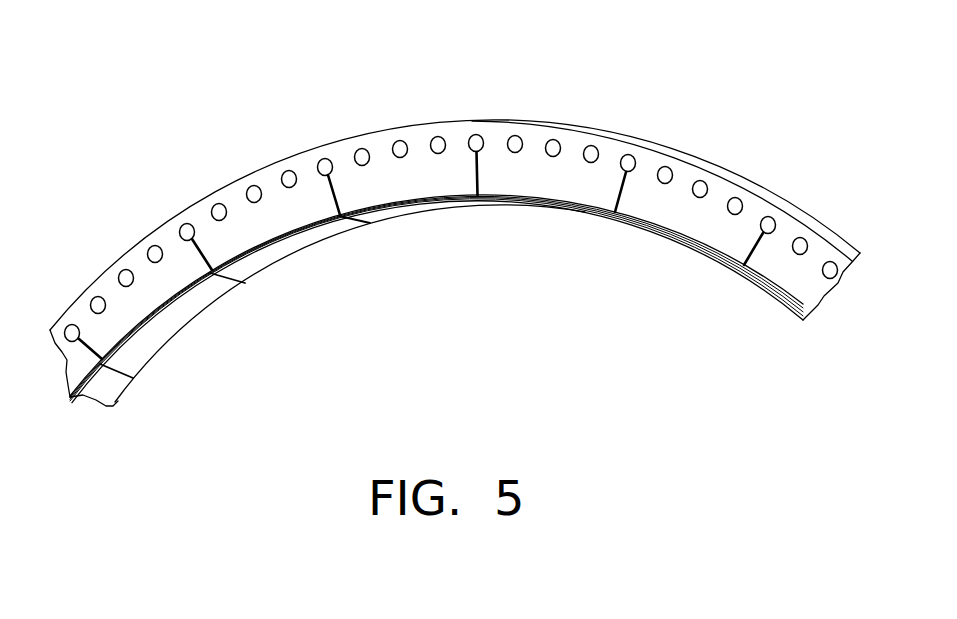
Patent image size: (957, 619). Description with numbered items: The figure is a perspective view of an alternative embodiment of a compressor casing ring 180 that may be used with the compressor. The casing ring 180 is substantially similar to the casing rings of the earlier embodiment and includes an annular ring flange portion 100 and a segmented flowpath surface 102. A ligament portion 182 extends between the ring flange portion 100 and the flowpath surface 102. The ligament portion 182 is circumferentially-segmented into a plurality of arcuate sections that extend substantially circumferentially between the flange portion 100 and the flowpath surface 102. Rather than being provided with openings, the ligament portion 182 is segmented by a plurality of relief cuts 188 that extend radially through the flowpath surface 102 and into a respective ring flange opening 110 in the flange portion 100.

The annular ring flange portion 100 is at (525, 122).
The compressor casing ring 180 is at (148, 237).
The ring flange opening 110 is at (188, 224).
The ligament portion 182 is at (700, 234).
The segmented flowpath surface 102 is at (678, 245).
The relief cuts 188 is at (182, 262).